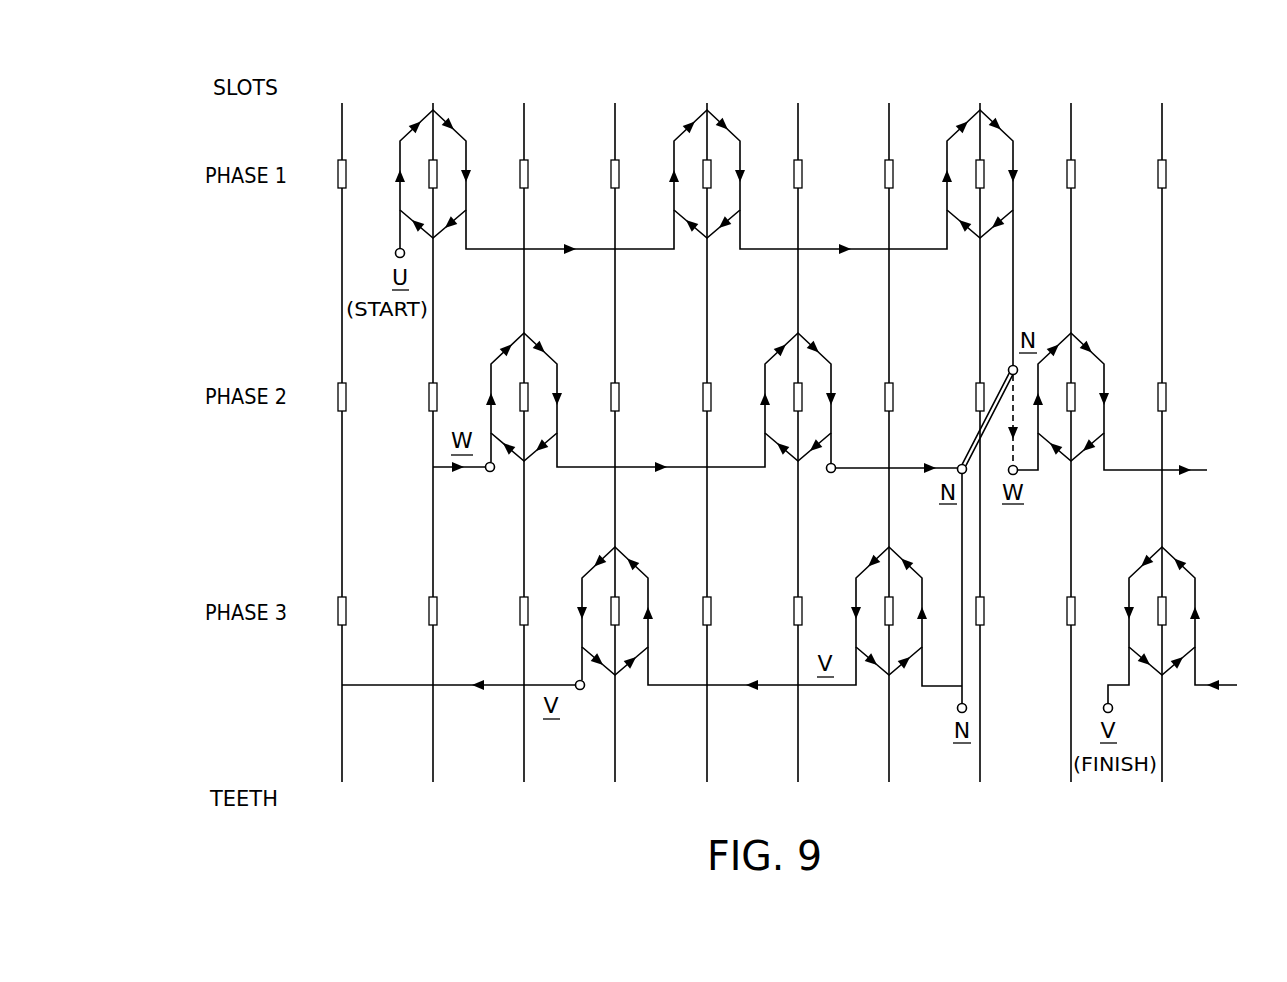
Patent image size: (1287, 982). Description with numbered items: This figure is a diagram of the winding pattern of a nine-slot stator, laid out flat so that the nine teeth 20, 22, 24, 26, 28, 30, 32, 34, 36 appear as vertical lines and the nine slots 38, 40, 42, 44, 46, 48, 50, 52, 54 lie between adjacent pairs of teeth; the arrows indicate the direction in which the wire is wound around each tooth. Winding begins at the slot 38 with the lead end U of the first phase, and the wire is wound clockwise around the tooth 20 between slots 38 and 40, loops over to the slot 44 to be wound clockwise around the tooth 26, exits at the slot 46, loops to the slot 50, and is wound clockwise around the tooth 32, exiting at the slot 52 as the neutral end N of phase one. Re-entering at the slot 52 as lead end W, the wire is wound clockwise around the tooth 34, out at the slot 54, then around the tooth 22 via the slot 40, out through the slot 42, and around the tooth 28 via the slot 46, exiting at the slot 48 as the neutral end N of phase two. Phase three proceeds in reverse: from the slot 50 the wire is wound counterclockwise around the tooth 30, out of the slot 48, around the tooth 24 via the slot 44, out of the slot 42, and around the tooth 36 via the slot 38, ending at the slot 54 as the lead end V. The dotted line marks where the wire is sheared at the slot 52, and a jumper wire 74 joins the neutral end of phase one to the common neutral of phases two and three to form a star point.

The tooth 20 is at (432, 457).
The tooth 22 is at (523, 457).
The tooth 24 is at (614, 457).
The tooth 26 is at (706, 457).
The tooth 28 is at (797, 457).
The tooth 30 is at (888, 457).
The tooth 32 is at (979, 457).
The tooth 34 is at (1070, 457).
The tooth 36 is at (751, 457).
The slot 38 is at (796, 157).
The slot 40 is at (512, 268).
The slot 42 is at (604, 375).
The slot 44 is at (695, 157).
The slot 46 is at (786, 268).
The slot 48 is at (877, 375).
The slot 50 is at (968, 157).
The slot 52 is at (1059, 268).
The slot 54 is at (1150, 375).
The jumper wire 74 is at (969, 442).